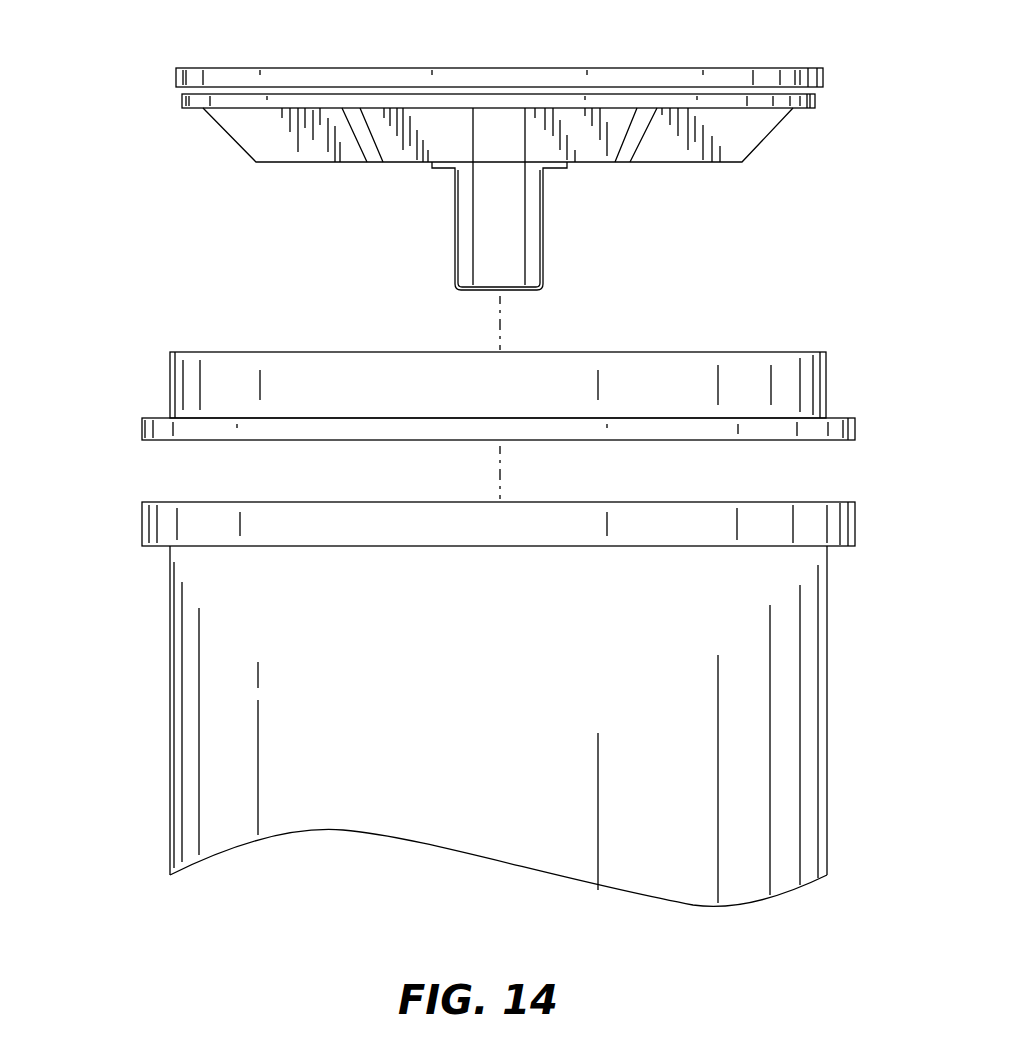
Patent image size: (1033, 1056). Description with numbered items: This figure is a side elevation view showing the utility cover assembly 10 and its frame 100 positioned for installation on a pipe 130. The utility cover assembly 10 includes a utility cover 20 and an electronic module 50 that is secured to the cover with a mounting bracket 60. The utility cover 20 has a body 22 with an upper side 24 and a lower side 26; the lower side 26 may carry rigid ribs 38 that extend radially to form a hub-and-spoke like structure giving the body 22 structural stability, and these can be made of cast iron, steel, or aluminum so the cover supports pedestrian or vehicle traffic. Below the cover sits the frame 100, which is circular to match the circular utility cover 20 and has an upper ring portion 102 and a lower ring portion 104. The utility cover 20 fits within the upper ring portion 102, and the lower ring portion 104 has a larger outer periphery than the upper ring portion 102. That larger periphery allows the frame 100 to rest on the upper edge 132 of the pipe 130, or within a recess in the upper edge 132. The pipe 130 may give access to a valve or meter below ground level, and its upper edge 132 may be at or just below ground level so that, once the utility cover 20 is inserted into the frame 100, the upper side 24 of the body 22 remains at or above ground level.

The utility cover assembly 10 is at (112, 157).
The utility cover 20 is at (830, 77).
The body 22 is at (176, 80).
The upper side 24 is at (337, 68).
The lower side 26 is at (800, 110).
The ribs 38 is at (289, 147).
The electronic module 50 is at (528, 236).
The mounting bracket 60 is at (455, 226).
The frame 100 is at (836, 392).
The upper ring portion 102 is at (170, 378).
The lower ring portion 104 is at (142, 430).
The pipe 130 is at (838, 656).
The upper edge 132 is at (857, 518).